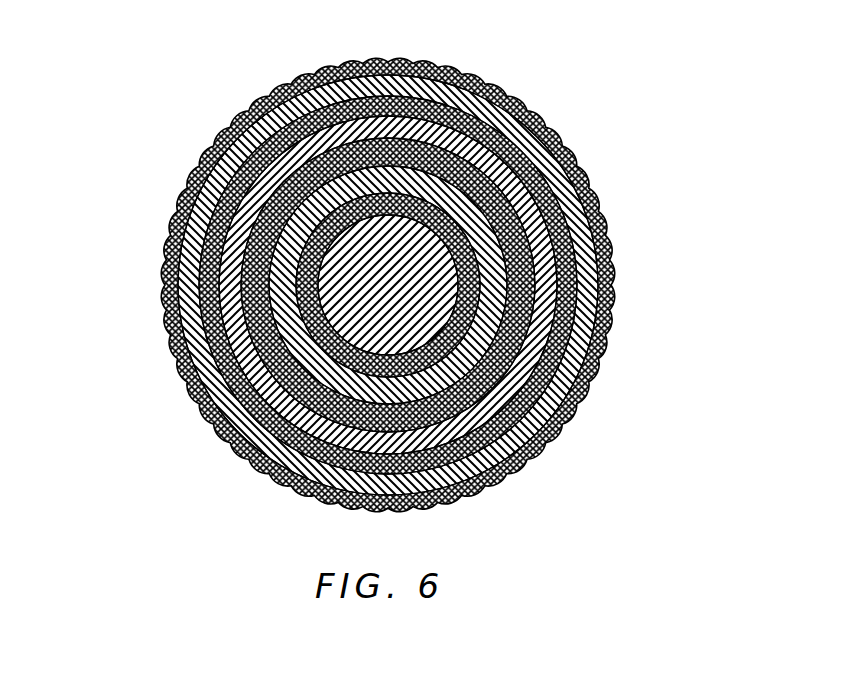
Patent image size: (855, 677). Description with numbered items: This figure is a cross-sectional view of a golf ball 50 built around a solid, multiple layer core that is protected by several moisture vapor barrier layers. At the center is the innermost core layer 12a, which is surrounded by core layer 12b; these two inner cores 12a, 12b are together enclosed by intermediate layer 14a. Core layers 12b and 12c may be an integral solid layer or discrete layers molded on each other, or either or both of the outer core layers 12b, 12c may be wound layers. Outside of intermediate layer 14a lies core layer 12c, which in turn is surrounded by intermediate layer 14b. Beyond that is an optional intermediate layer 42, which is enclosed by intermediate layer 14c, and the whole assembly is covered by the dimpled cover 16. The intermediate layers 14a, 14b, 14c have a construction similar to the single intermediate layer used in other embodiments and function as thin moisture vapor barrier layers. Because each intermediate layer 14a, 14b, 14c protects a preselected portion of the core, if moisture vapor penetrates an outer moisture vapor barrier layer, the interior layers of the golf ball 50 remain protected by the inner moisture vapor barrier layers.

The golf ball 50 is at (615, 135).
The dimpled cover 16 is at (528, 100).
The optional intermediate layer 42 is at (335, 117).
The intermediate layer 14c is at (290, 87).
The intermediate layer 14b is at (270, 160).
The intermediate layer 14a is at (300, 230).
The core layer 12c is at (355, 192).
The core layer 12b is at (320, 285).
The core layer 12a is at (245, 345).